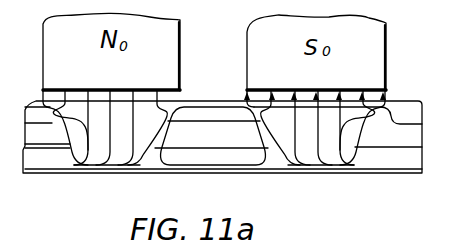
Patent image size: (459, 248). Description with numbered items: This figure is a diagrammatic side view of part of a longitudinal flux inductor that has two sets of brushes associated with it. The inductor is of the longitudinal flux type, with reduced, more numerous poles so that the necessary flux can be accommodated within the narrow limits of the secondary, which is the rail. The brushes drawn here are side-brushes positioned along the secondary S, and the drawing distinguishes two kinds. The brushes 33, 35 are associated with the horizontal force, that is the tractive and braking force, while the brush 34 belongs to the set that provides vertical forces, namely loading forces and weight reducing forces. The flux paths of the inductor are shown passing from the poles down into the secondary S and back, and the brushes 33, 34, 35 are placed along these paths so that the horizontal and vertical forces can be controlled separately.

The brush 33 is at (65, 155).
The brush 34 is at (141, 158).
The brush 35 is at (352, 151).
The magnetic recording medium strip S is at (407, 98).